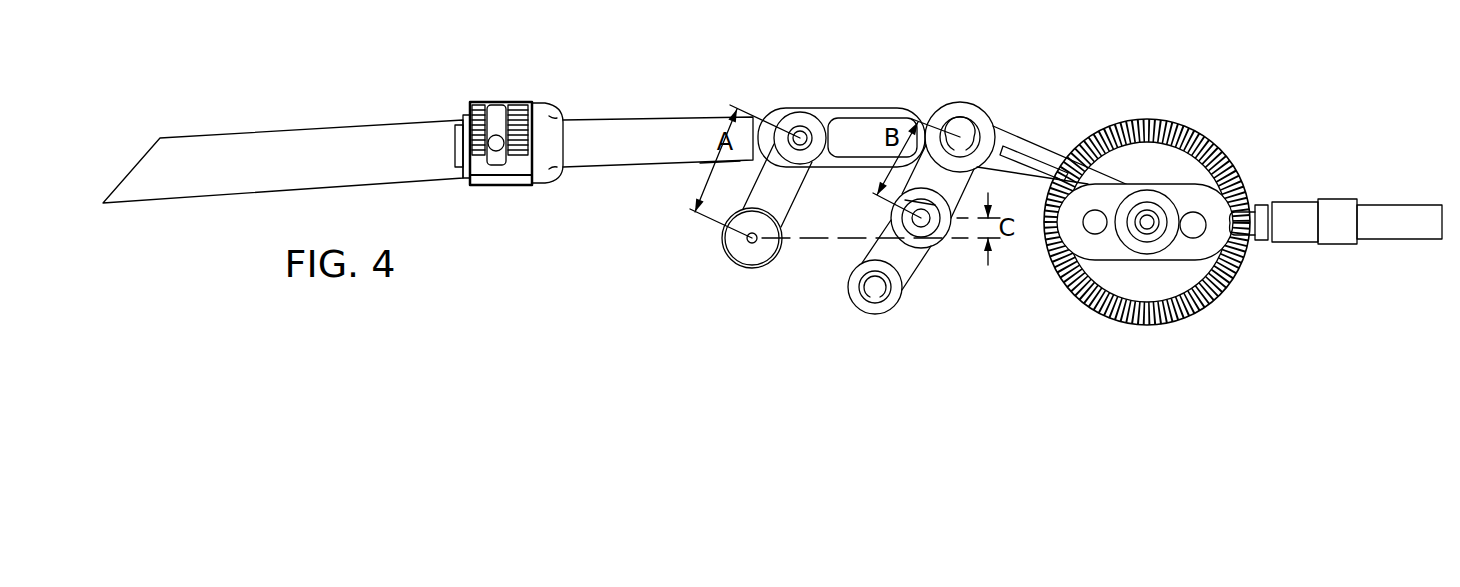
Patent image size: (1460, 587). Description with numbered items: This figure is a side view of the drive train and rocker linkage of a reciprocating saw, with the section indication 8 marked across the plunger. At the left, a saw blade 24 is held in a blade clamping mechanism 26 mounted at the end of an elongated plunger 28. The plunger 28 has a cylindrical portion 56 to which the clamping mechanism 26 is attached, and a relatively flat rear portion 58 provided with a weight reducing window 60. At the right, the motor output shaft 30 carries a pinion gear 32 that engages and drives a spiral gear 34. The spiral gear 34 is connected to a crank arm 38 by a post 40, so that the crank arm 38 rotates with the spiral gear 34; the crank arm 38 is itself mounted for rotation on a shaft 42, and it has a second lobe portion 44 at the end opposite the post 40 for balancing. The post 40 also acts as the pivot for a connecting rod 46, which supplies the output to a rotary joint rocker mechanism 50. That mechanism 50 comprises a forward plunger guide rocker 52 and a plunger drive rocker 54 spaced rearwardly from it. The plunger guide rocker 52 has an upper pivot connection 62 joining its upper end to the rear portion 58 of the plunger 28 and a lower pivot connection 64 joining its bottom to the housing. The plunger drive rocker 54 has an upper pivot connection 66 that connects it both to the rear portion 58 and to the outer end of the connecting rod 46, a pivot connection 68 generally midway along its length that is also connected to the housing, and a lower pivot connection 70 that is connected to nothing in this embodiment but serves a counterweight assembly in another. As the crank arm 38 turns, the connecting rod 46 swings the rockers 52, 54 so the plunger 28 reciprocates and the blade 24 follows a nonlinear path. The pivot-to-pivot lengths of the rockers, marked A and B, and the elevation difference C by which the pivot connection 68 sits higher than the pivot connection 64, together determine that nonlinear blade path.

The section line 8- 8 is at (428, 147).
The saw blade 24 is at (212, 167).
The blade clamping mechanism 26 is at (515, 101).
The plunger 28 is at (647, 170).
The output shaft 30 is at (1293, 222).
The pinion gear 32 is at (1250, 190).
The spiral gear 34 is at (1183, 197).
The crank arm 38 is at (1224, 152).
The post 40 is at (1195, 227).
The shaft 42 is at (1149, 226).
The second lobe portion 44 is at (1073, 240).
The connecting rod 46 is at (1047, 140).
The rotary joint rocker mechanism 50 is at (983, 47).
The plunger guide rocker 52 is at (783, 178).
The plunger drive rocker 54 is at (944, 178).
The cylindrical portion 56 is at (620, 140).
The rear portion 58 is at (843, 108).
The weight reducing window 60 is at (875, 128).
The upper pivot connection 62 is at (803, 130).
The lower pivot connection 64 is at (752, 244).
The upper pivot connection 66 is at (975, 124).
The pivot connection 68 is at (912, 218).
The lower pivot connection 70 is at (862, 295).